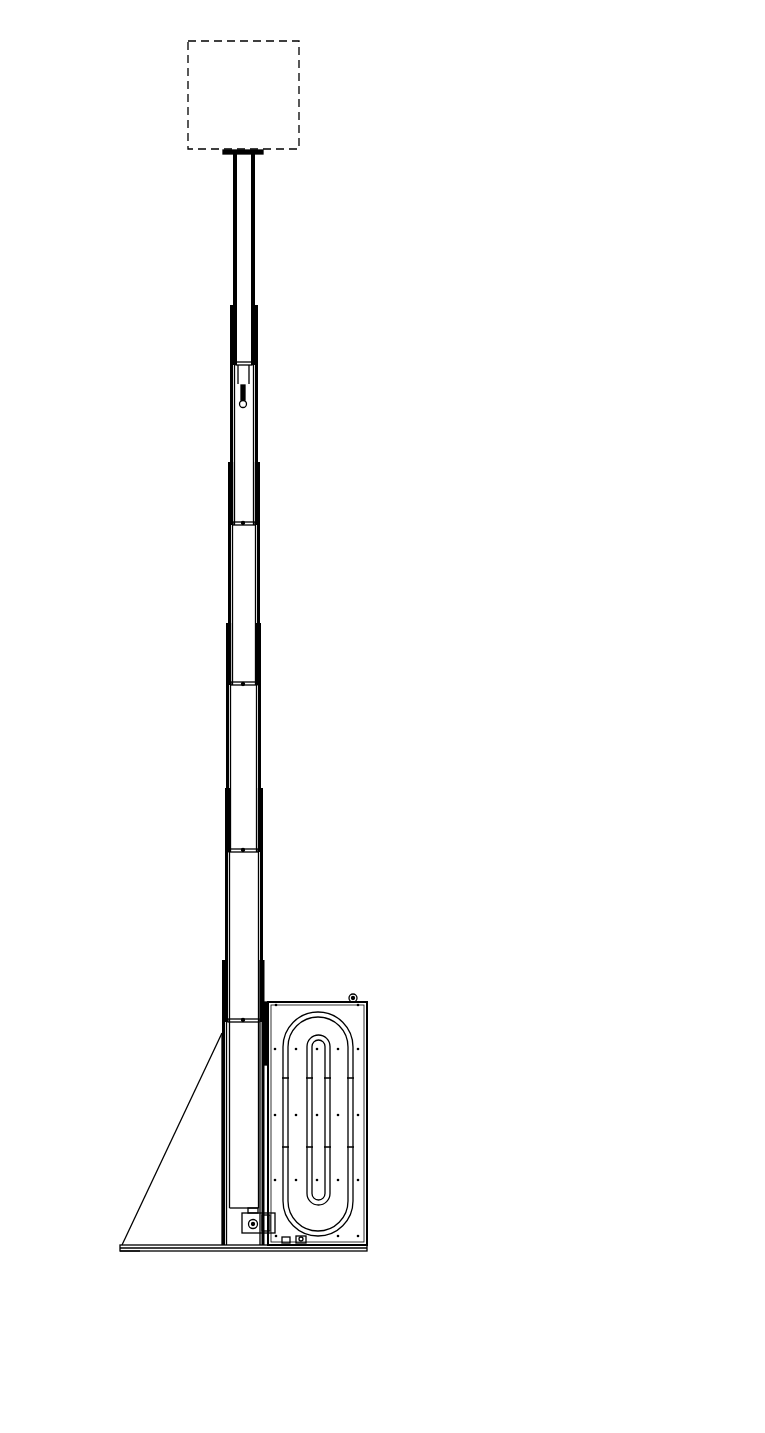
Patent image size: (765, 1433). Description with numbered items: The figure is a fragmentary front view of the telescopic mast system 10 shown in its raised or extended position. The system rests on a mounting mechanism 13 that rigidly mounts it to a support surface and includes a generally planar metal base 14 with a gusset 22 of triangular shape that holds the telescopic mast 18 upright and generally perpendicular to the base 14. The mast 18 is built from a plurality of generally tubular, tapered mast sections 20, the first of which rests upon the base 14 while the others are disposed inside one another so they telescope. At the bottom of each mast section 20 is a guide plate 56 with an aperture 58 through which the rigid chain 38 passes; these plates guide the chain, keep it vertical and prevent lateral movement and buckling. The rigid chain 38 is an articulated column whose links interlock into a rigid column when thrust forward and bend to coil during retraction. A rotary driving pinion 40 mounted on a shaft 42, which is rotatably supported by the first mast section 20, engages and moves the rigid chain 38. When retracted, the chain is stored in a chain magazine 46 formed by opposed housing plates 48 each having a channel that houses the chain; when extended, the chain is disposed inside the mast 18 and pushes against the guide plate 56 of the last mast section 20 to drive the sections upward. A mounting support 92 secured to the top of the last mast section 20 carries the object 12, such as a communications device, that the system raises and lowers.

The telescopic mast system 10 is at (468, 472).
The object 12 is at (310, 67).
The mounting mechanism 13 is at (126, 1266).
The base 14 is at (147, 1244).
The telescopic mast 18 is at (272, 509).
The telescopic mast sections 20 is at (258, 282).
The gusset 22 is at (176, 1132).
The rigid chain 38 is at (248, 400).
The driving pinion 40 is at (255, 1230).
The shaft 42 is at (252, 1236).
The chain magazine 46 is at (360, 1099).
The housing plate 48 is at (340, 1082).
The guide plate 56 is at (252, 364).
The aperture 58 is at (243, 523).
The mounting support 92 is at (258, 151).